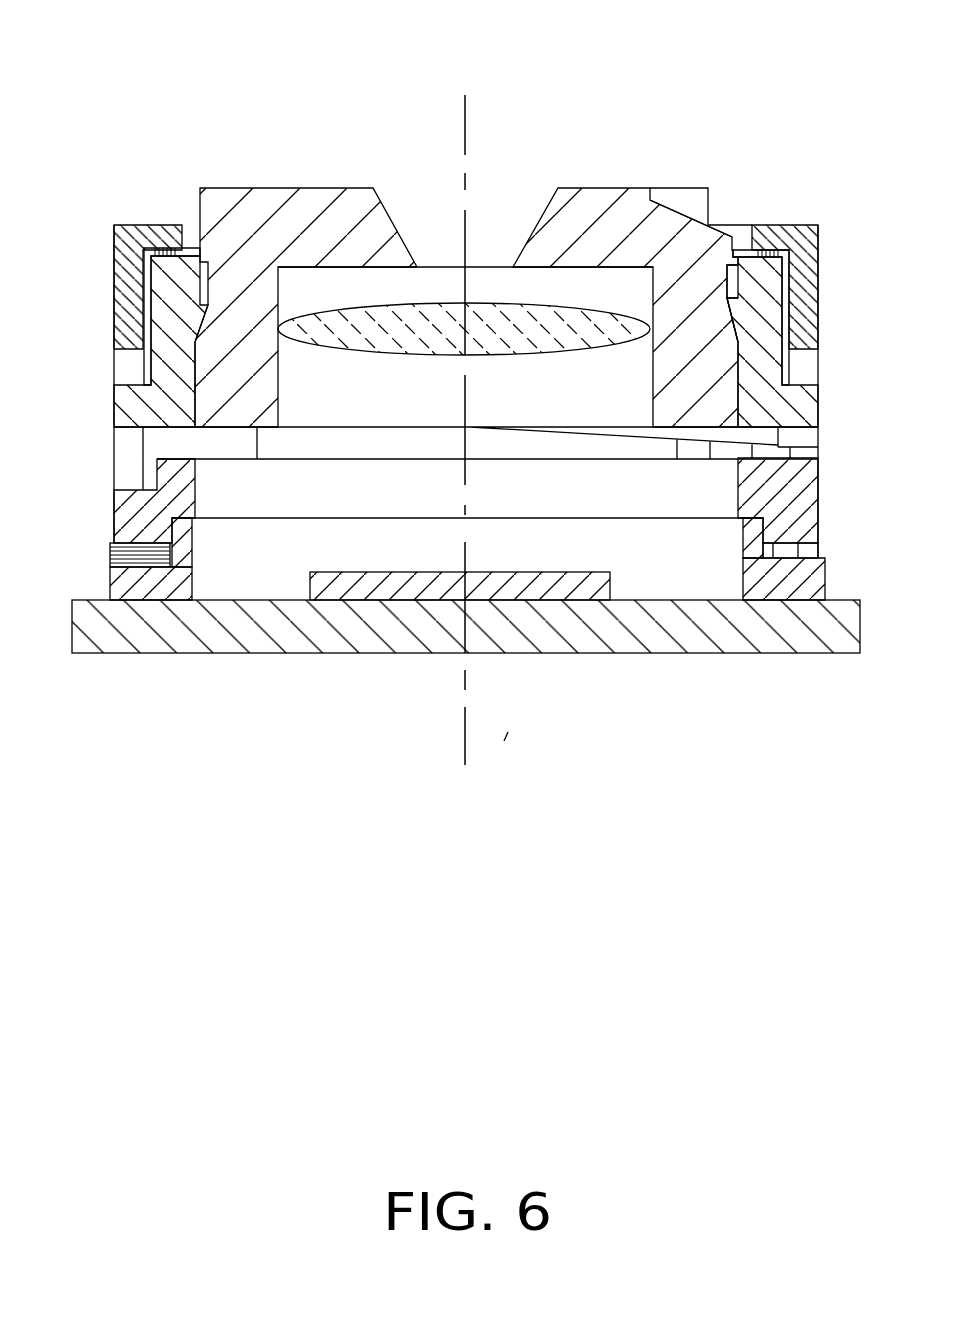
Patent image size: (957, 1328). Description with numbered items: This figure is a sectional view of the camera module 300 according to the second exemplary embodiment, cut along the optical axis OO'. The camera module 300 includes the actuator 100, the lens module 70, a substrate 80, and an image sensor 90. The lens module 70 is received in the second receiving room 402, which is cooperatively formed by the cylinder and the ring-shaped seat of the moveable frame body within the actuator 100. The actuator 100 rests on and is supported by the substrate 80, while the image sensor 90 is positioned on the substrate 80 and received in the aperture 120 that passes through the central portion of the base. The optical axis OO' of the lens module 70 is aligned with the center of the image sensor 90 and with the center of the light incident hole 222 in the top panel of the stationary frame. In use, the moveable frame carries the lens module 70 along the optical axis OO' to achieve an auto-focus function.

The camera module 300 is at (146, 58).
The lens module 70 is at (243, 210).
The actuator 100 is at (128, 230).
The light incident hole 222 is at (737, 233).
The second receiving room 402 is at (735, 302).
The substrate 80 is at (153, 640).
The image sensor 90 is at (580, 590).
The aperture 120 is at (238, 565).